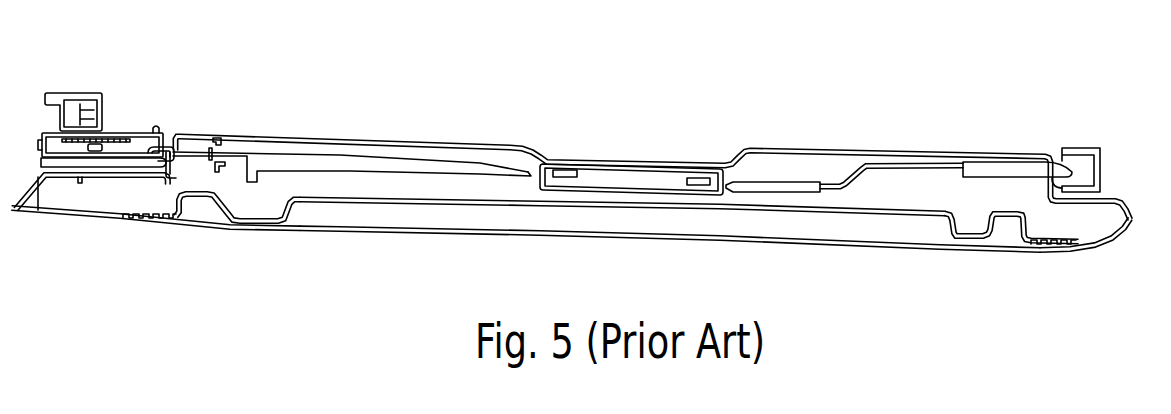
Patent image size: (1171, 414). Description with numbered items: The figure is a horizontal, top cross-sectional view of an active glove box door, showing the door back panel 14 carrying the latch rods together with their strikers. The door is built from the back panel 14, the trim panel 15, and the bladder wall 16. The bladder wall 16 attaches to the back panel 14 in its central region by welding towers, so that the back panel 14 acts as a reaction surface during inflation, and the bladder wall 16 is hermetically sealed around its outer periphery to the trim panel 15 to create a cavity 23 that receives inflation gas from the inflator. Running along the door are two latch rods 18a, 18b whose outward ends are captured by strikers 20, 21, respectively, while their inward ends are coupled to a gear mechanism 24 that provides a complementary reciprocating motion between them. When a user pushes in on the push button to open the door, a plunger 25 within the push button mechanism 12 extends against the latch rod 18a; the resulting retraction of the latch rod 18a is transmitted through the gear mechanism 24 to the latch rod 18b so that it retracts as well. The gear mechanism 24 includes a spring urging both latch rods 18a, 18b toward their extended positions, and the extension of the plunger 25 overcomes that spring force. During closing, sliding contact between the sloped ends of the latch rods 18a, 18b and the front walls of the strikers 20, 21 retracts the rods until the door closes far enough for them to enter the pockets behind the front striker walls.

The push button mechanism 12 is at (68, 89).
The back panel 14 is at (393, 137).
The trim panel 15 is at (345, 232).
The bladder wall 16 is at (548, 205).
The latch rod 18a is at (168, 178).
The latch rod 18b is at (1027, 172).
The striker 20 is at (157, 131).
The striker 21 is at (1083, 148).
The cavity 23 is at (770, 229).
The gear mechanism 24 is at (643, 178).
The plunger 25 is at (135, 140).